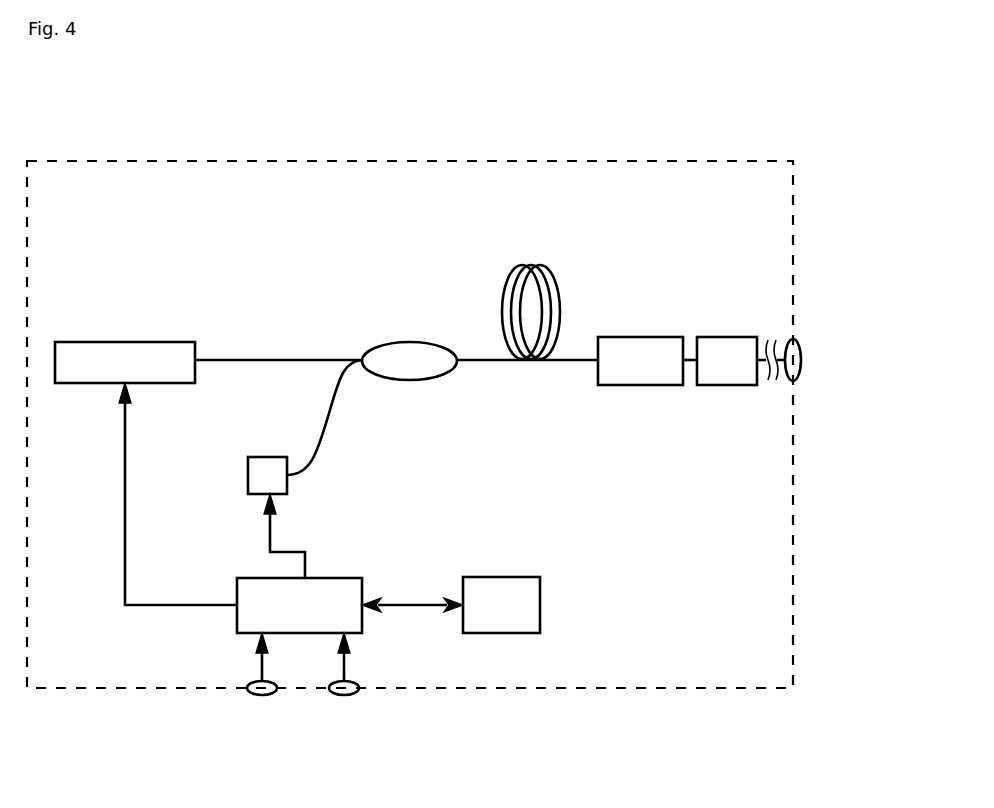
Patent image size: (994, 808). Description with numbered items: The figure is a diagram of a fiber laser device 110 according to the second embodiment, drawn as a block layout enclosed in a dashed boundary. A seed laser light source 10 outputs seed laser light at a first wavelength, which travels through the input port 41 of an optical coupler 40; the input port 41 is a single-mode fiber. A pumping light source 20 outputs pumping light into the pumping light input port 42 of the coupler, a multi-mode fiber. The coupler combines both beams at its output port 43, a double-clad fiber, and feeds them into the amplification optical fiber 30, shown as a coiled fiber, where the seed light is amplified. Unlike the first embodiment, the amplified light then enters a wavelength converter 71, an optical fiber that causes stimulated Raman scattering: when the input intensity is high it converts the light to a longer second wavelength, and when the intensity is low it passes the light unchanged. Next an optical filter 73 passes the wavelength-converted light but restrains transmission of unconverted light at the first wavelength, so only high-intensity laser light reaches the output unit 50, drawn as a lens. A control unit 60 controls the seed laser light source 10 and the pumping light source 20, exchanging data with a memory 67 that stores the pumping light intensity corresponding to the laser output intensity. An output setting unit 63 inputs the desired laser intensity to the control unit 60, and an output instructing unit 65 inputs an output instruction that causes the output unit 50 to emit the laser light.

The fiber laser device 110 is at (462, 159).
The seed laser light source 10 is at (128, 348).
The input port 41 is at (295, 358).
The optical coupler 40 is at (400, 352).
The output port 43 is at (478, 359).
The amplification optical fiber 30 is at (562, 359).
The wavelength converter 71 is at (645, 378).
The optical filter 73 is at (722, 378).
The output unit 50 is at (798, 343).
The pumping light input port 42 is at (325, 430).
The pumping light source 20 is at (262, 473).
The control unit 60 is at (275, 583).
The memory 67 is at (532, 607).
The output setting unit 63 is at (267, 695).
The output instructing unit 65 is at (350, 695).